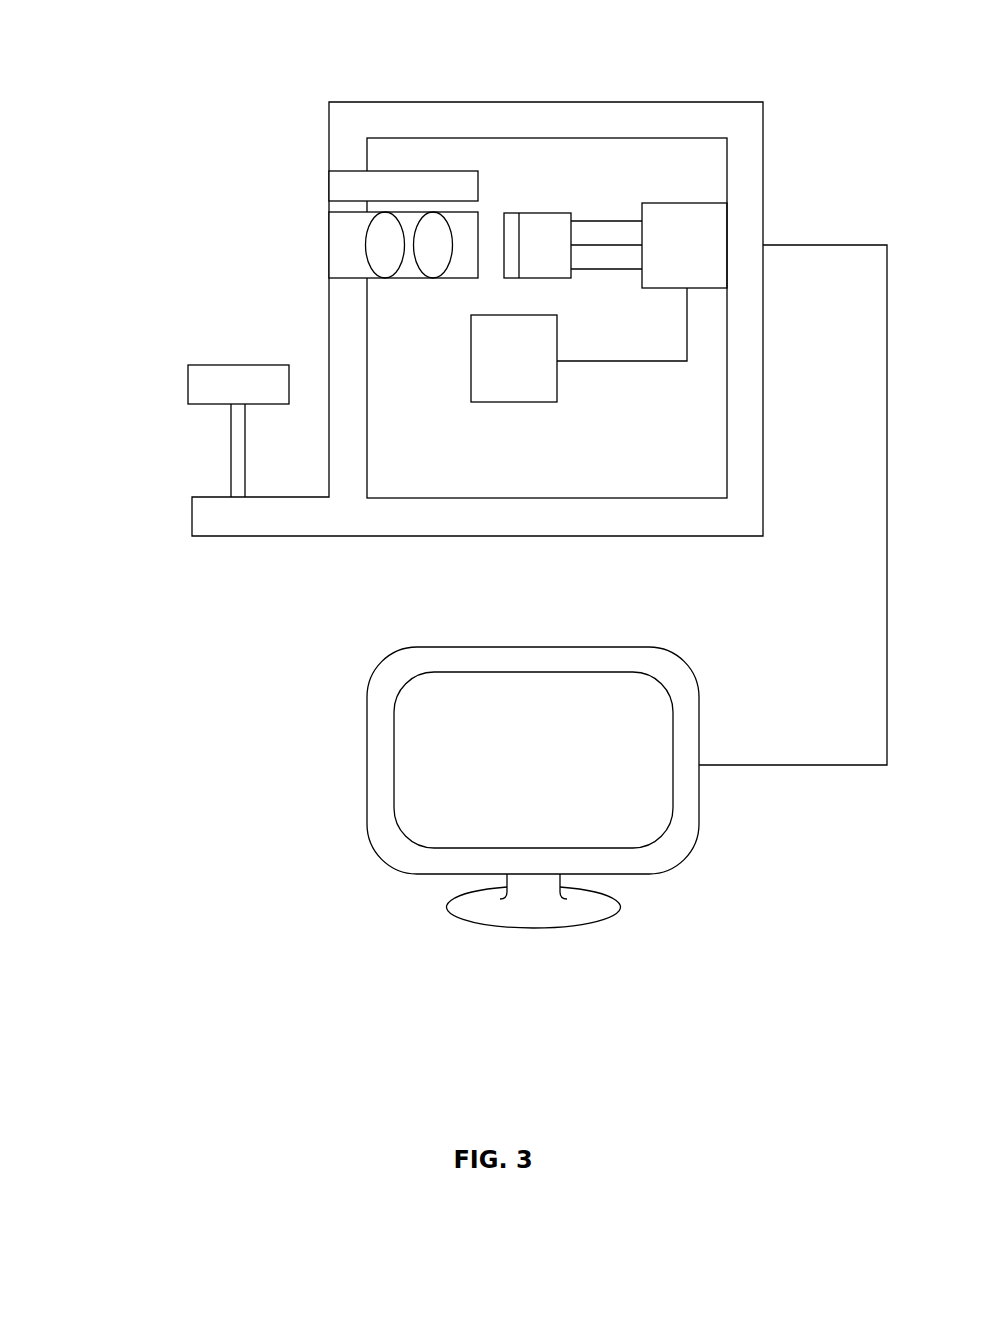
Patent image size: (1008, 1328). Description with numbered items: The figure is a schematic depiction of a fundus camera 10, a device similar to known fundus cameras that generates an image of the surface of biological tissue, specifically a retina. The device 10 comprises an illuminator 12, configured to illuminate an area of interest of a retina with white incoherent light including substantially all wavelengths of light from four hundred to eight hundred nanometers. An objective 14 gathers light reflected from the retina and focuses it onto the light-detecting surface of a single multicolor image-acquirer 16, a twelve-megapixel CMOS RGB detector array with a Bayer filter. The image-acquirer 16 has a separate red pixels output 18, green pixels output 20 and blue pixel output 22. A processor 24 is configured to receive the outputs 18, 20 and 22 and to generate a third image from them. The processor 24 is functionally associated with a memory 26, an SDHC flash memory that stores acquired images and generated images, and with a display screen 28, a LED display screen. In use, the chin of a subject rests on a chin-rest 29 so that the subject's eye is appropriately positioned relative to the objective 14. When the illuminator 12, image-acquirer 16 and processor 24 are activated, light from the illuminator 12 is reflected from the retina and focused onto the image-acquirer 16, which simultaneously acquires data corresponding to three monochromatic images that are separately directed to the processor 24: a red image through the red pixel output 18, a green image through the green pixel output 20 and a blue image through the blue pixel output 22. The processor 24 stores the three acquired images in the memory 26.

The fundus camera 10 is at (248, 1015).
The illuminator 12 is at (345, 172).
The objective 14 is at (329, 245).
The multicolor image-acquirer 16 is at (538, 212).
The red pixels output 18 is at (578, 220).
The green pixels output 20 is at (600, 245).
The blue pixel output 22 is at (610, 270).
The processor 24 is at (727, 224).
The memory 26 is at (513, 402).
The display screen 28 is at (367, 772).
The chin-rest 29 is at (187, 385).